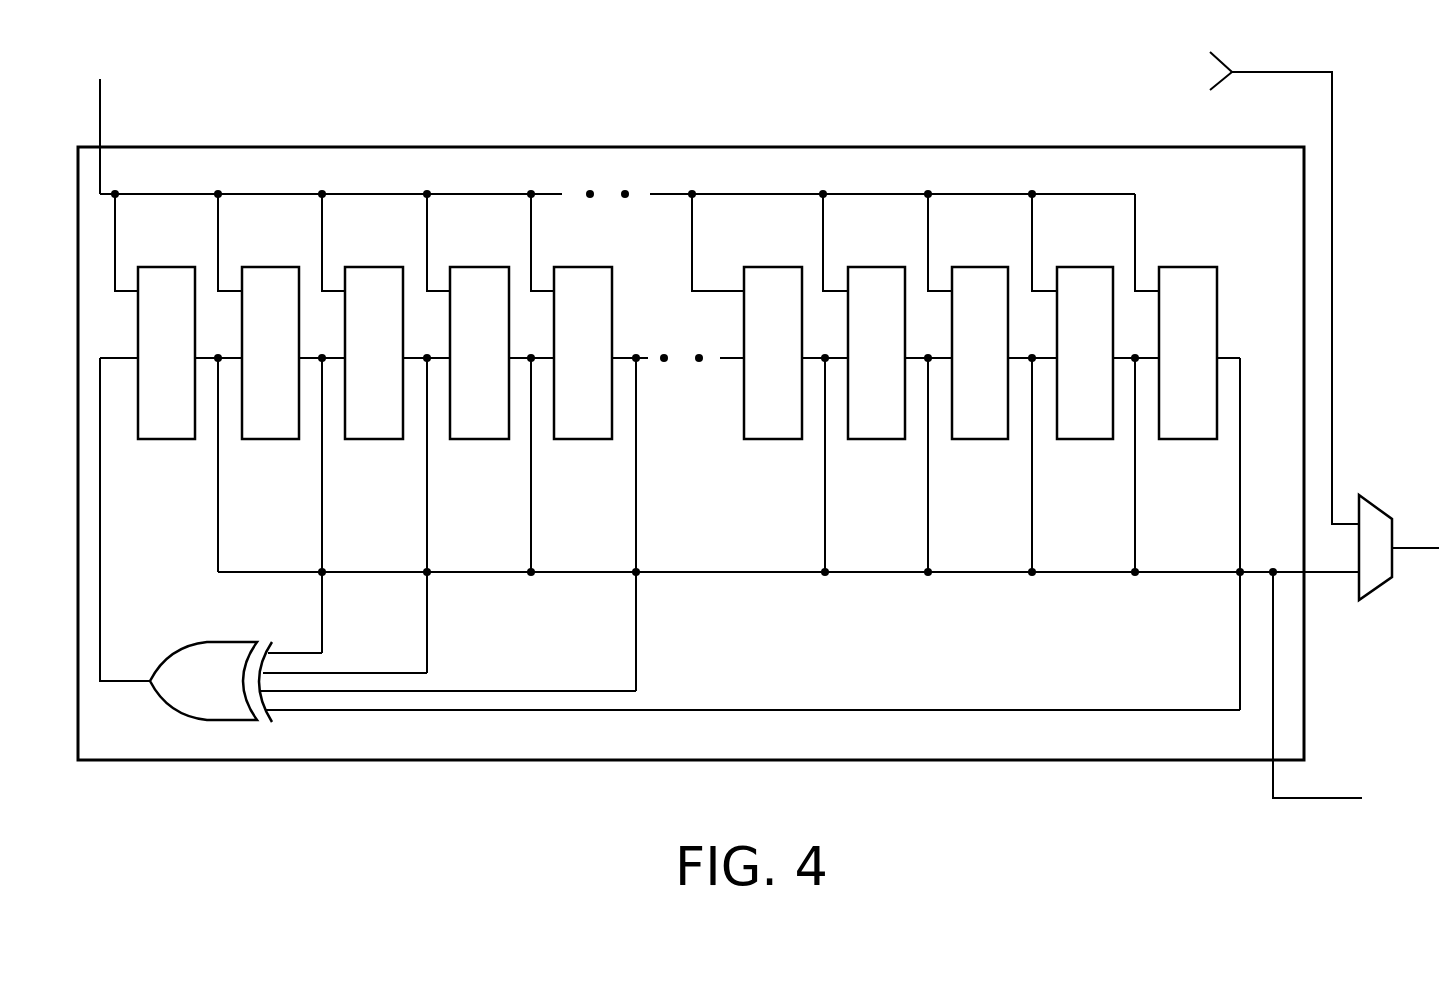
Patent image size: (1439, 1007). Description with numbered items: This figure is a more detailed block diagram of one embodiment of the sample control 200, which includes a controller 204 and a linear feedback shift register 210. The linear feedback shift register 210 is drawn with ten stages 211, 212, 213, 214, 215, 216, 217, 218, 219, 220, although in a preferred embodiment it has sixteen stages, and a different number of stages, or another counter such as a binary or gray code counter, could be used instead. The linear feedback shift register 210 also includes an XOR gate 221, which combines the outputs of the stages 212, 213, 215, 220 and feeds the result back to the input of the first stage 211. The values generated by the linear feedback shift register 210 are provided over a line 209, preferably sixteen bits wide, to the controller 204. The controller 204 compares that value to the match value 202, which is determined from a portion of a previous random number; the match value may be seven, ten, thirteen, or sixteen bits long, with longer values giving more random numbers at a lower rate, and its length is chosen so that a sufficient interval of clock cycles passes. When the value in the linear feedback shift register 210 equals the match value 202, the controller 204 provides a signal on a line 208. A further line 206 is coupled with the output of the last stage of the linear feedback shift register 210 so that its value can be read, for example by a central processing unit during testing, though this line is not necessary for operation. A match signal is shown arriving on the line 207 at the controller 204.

The sample control 200 is at (817, 48).
The match value 202 is at (100, 114).
The controller 204 is at (1378, 495).
The line 206 is at (1325, 800).
The match line 207 is at (1332, 203).
The line 208 is at (1414, 551).
The line 209 is at (1336, 575).
The linear feedback shift register 210 is at (658, 147).
The first stage 211 is at (186, 336).
The stage 212 is at (290, 336).
The stage 213 is at (394, 336).
The stage 214 is at (499, 336).
The stage 215 is at (603, 336).
The stage 216 is at (793, 336).
The stage 217 is at (896, 336).
The stage 218 is at (1000, 336).
The stage 219 is at (1105, 336).
The stage 220 is at (1208, 336).
The XOR gate 221 is at (205, 640).